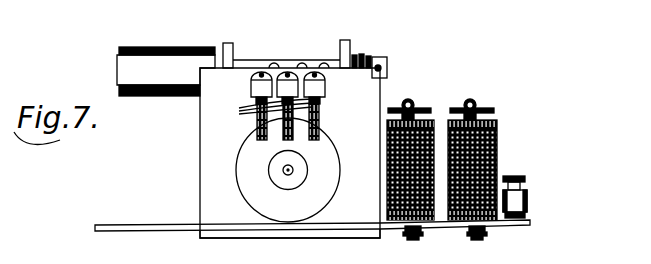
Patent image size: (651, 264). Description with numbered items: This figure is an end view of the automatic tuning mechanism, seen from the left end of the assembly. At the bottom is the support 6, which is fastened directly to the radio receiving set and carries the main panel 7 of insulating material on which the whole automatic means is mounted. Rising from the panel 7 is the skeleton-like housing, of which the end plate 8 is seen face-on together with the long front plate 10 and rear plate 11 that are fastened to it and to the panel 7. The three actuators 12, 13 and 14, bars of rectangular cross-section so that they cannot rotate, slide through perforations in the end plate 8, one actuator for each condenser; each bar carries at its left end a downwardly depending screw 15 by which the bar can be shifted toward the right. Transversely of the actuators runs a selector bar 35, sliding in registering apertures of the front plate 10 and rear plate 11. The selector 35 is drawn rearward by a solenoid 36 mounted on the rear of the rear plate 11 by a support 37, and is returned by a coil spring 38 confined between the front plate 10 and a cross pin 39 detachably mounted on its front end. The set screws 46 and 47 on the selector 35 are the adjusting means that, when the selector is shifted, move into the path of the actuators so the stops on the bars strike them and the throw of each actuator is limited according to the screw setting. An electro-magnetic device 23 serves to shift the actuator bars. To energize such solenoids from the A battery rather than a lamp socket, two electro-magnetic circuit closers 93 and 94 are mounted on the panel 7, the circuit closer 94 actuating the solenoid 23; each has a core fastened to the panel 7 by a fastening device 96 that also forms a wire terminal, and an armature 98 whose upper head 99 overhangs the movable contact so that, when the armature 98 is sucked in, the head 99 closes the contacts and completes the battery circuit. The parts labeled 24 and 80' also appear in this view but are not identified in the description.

The support 6 is at (286, 238).
The main panel 7 is at (144, 224).
The end plate 8 is at (199, 148).
The front plate 10 is at (346, 40).
The rear plate 11 is at (238, 31).
The actuator 12 is at (326, 86).
The actuator 13 is at (288, 78).
The actuator 14 is at (251, 87).
The screw 15 is at (264, 112).
The electro-magnetic device 23 is at (338, 172).
The hub 24 is at (290, 185).
The selector bar 35 is at (248, 60).
The solenoid 36 is at (160, 47).
The support 37 is at (166, 70).
The coil spring 38 is at (363, 56).
The cross pin 39 is at (388, 63).
The set screw 46 is at (275, 63).
The set screw 47 is at (303, 63).
The armature 98 is at (324, 64).
The valve 80' is at (534, 197).
The electro-magnetic circuit closer 93 is at (497, 150).
The electro-magnetic circuit closer 94 is at (422, 119).
The fastening device 96 is at (477, 234).
The upper head 99 is at (490, 108).